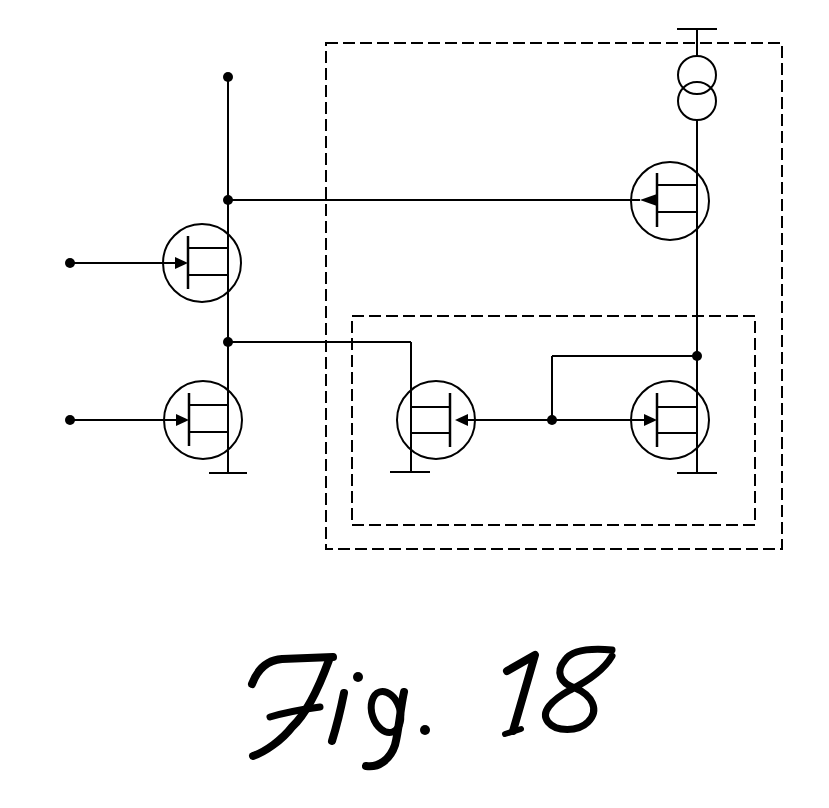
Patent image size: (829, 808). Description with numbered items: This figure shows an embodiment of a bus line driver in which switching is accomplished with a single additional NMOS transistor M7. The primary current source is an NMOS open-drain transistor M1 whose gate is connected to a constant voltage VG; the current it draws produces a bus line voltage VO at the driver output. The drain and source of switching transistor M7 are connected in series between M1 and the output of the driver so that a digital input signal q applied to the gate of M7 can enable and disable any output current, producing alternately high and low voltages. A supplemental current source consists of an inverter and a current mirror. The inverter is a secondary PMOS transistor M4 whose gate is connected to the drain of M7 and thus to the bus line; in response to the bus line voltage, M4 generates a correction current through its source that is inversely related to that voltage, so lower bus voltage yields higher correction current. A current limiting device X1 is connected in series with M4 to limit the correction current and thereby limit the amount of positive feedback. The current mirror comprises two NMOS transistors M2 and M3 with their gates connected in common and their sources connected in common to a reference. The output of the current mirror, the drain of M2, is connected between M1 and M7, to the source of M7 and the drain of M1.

The primary transistor M1 is at (180, 440).
The current mirror transistor M2 is at (453, 441).
The current mirror transistor M3 is at (653, 440).
The secondary PMOS transistor M4 is at (649, 221).
The switching transistor M7 is at (180, 283).
The current limiting device X1 is at (723, 74).
The bus line voltage VO is at (227, 51).
The constant voltage VG is at (97, 418).
The digital input signal q is at (99, 259).